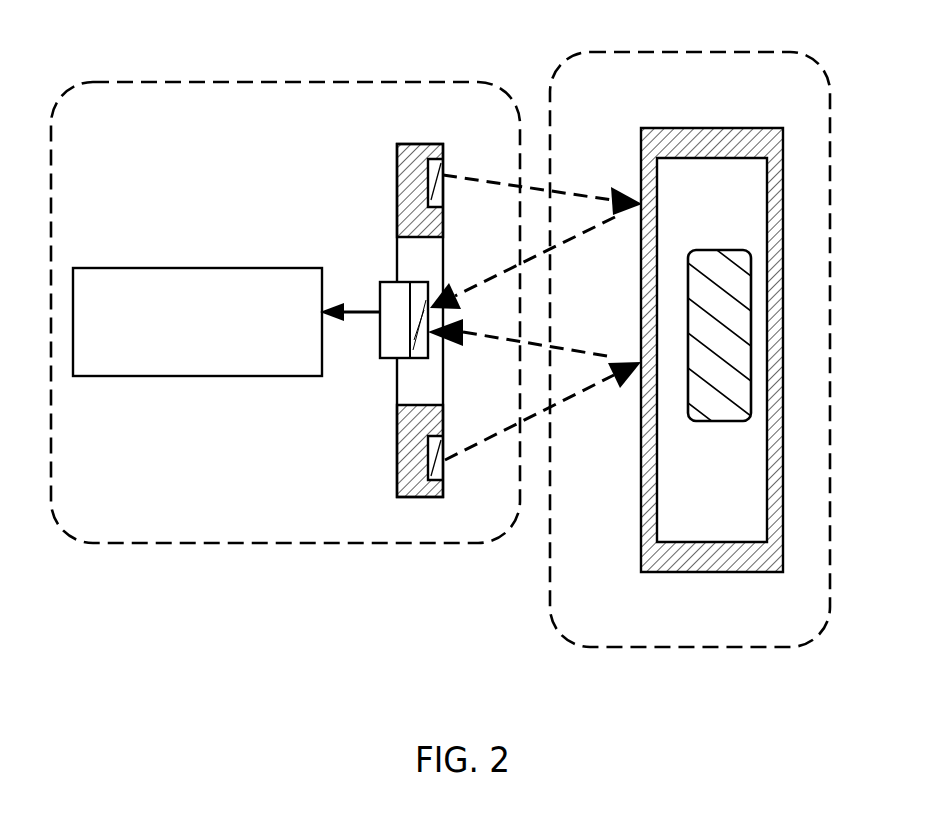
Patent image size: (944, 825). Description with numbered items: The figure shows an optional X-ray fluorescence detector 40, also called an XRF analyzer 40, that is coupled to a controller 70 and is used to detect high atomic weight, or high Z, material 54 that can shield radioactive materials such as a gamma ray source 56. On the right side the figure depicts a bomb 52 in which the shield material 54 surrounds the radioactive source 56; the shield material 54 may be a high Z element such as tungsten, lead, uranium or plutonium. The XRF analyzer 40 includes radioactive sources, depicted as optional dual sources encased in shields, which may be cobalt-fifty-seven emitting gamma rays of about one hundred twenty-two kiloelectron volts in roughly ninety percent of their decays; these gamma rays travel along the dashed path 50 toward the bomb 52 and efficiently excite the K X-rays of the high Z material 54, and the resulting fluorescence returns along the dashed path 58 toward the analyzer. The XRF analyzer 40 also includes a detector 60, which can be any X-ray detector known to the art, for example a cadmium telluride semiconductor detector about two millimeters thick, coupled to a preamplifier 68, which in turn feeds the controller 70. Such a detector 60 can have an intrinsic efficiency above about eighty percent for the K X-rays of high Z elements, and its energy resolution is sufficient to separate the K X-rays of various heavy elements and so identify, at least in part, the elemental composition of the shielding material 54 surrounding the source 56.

The X-ray fluorescence (XRF) detector 40 is at (318, 82).
The emitted light beam 50 is at (493, 433).
The bomb 52 is at (587, 648).
The high atomic weight (high Z) material 54 is at (713, 575).
The gamma ray source 56 is at (714, 260).
The reflected light beam 58 is at (482, 280).
The detector 60 is at (417, 362).
The preamplifier 68 is at (387, 352).
The controller 70 is at (90, 378).